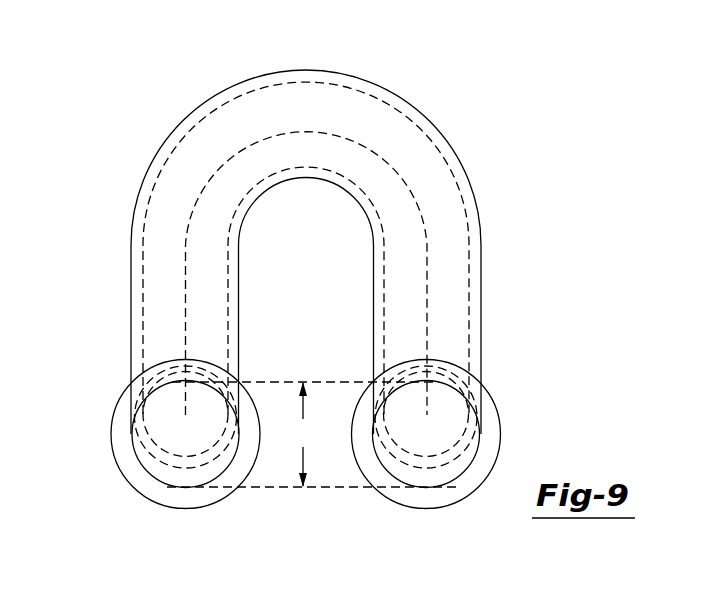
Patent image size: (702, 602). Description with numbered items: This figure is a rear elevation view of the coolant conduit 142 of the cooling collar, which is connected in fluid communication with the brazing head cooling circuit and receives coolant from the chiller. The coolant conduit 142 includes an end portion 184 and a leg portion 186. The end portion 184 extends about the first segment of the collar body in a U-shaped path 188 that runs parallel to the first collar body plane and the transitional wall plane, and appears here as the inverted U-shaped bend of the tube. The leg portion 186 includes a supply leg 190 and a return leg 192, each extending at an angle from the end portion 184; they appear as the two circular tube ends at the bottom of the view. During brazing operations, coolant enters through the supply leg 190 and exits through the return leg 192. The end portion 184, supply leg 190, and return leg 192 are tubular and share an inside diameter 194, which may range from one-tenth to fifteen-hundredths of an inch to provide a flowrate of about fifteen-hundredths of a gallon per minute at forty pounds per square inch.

The coolant conduit 142 is at (306, 318).
The end portion 184 is at (147, 154).
The leg portion 186 is at (345, 505).
The U-shaped path 188 is at (172, 227).
The supply leg 190 is at (111, 434).
The return leg 192 is at (502, 436).
The inside diameter 194 is at (303, 434).